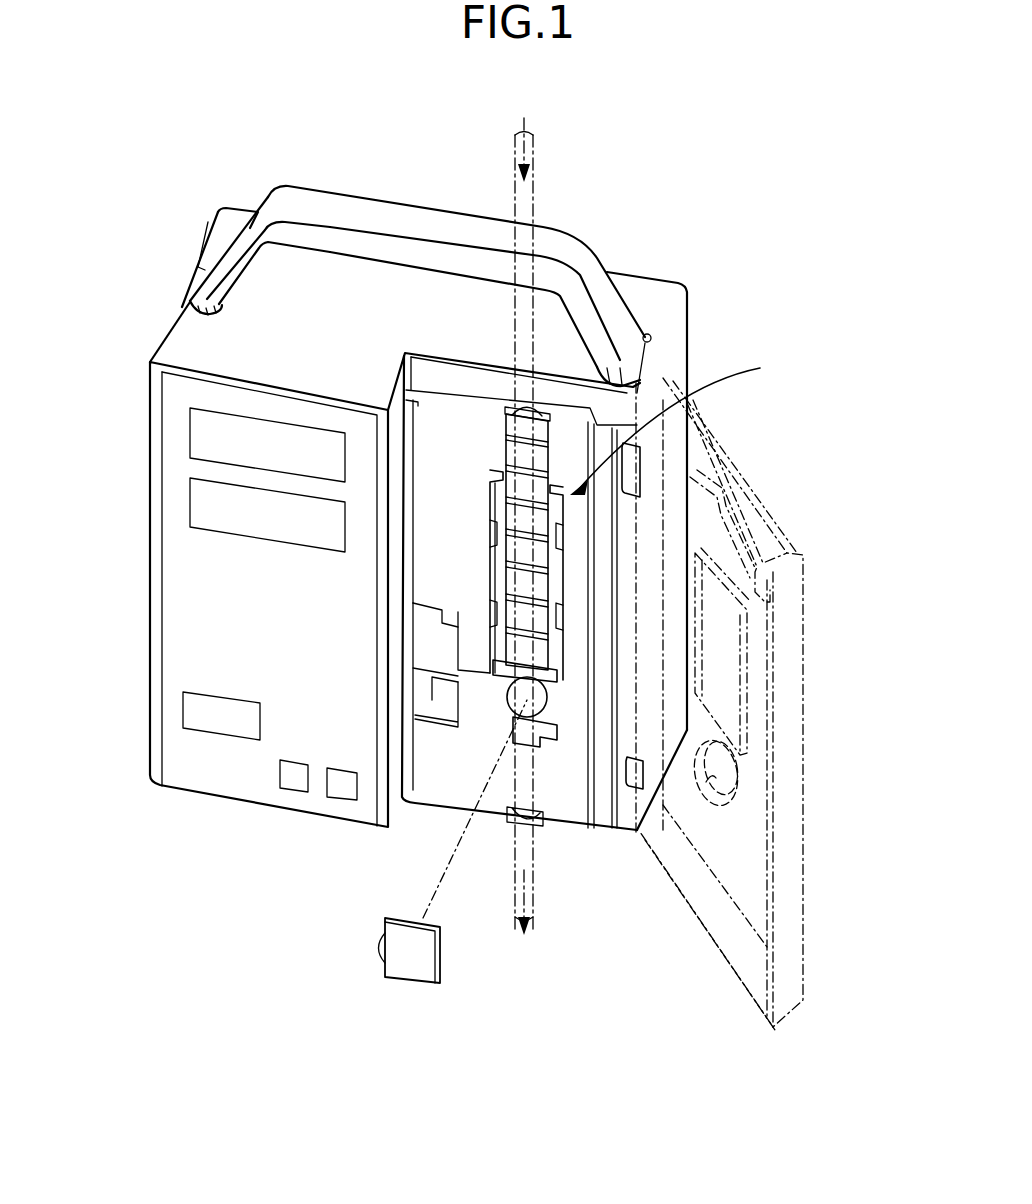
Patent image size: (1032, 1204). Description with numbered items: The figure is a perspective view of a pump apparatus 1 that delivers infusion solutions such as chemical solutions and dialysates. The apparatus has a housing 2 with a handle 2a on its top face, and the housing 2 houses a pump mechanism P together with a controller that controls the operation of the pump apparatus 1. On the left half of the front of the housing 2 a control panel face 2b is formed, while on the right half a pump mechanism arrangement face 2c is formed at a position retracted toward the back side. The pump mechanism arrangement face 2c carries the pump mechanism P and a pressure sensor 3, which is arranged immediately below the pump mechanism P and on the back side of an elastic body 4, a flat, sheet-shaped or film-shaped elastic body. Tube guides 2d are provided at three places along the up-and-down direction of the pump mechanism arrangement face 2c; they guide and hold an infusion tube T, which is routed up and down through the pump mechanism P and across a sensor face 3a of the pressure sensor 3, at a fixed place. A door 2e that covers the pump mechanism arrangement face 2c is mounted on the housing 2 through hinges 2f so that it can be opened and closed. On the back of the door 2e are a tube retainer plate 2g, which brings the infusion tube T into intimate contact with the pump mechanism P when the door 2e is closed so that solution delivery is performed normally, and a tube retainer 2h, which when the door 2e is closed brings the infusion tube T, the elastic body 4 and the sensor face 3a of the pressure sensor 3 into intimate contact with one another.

The pump apparatus 1 is at (728, 186).
The housing 2 is at (184, 328).
The handle 2a is at (302, 205).
The control panel face 2b is at (212, 610).
The pump mechanism arrangement face 2c is at (448, 438).
The tube guides 2d is at (543, 410).
The door 2e is at (808, 746).
The hinges 2f is at (703, 455).
The tube retainer plate 2g is at (715, 678).
The tube retainer 2h is at (712, 800).
The pressure sensor 3 is at (520, 700).
The sensor face 3a is at (505, 703).
The elastic body 4 is at (397, 965).
The infusion tube T is at (534, 173).
The pump mechanism P is at (672, 423).